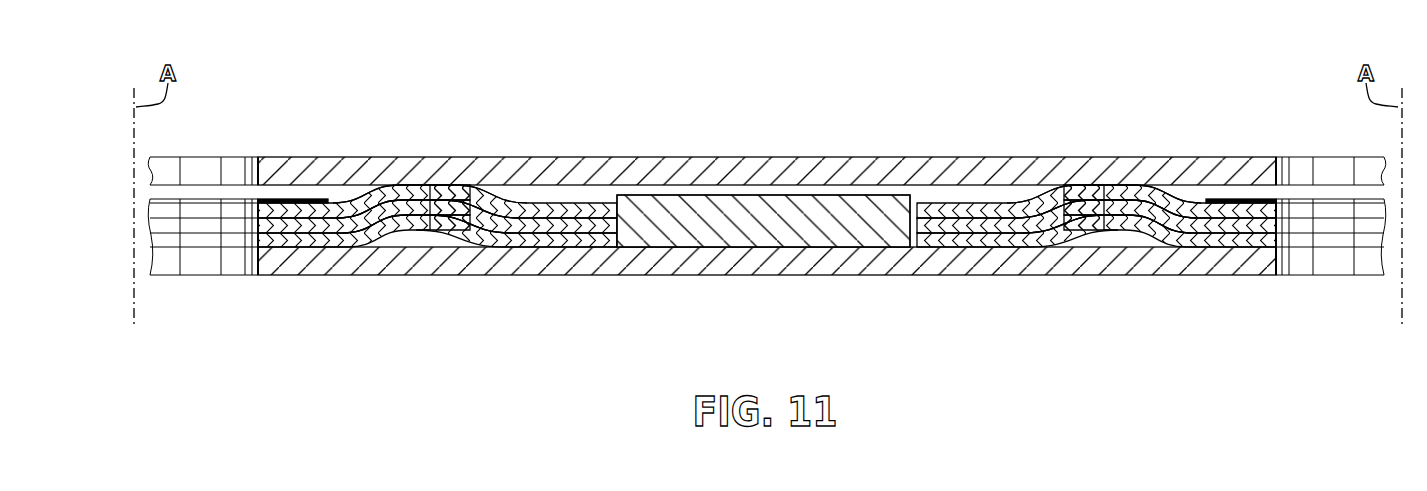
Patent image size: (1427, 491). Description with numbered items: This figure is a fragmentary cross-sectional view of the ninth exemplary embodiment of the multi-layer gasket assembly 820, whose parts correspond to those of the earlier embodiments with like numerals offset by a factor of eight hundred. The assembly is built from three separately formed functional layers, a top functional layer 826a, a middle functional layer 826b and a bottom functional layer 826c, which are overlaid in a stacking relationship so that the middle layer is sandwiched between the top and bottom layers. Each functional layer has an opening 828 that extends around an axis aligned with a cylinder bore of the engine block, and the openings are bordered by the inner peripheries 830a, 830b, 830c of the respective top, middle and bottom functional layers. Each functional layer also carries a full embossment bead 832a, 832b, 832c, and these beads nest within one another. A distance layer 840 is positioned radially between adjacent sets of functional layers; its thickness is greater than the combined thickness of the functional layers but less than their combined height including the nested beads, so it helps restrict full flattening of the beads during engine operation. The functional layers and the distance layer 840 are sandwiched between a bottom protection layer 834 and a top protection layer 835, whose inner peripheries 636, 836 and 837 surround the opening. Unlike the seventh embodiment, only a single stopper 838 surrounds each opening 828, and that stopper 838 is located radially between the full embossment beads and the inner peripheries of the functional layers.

The multi-layer gasket assembly 820 is at (1013, 113).
The top functional layer 826a is at (522, 213).
The middle functional layer 826b is at (553, 225).
The bottom functional layer 826c is at (583, 240).
The opening 828 is at (198, 237).
The inner periphery of top functional layer 830a is at (258, 209).
The inner periphery of middle functional layer 830b is at (258, 228).
The inner periphery of bottom functional layer 830c is at (258, 242).
The full embossment bead of top functional layer 832a is at (423, 187).
The full embossment bead of middle functional layer 832b is at (462, 215).
The full embossment bead of bottom functional layer 832c is at (470, 205).
The bottom protection layer 834 is at (723, 263).
The top protection layer 835 is at (765, 170).
The inner periphery of bottom protection layer 636 is at (249, 268).
The inner periphery of bottom protection layer 836 is at (1285, 268).
The inner periphery of top protection layer 837 is at (255, 175).
The stopper 838 is at (275, 197).
The distance layer 840 is at (810, 235).